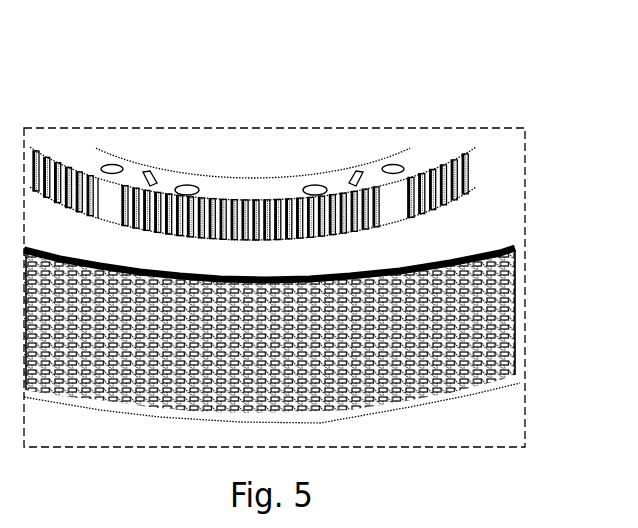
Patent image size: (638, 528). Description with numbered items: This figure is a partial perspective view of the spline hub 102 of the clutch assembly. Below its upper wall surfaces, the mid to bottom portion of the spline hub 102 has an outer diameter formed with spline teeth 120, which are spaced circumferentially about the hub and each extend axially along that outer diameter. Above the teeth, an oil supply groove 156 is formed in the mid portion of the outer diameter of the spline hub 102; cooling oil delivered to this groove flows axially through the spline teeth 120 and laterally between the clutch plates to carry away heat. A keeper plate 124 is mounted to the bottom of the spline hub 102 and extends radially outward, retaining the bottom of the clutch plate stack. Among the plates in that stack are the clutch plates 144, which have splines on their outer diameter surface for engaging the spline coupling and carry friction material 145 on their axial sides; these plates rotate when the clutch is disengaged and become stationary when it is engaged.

The spline hub 102 is at (247, 170).
The spline teeth 120 is at (203, 200).
The oil supply groove 156 is at (128, 160).
The friction material 145 is at (461, 227).
The clutch plates 144 is at (401, 387).
The keeper plate 124 is at (160, 430).